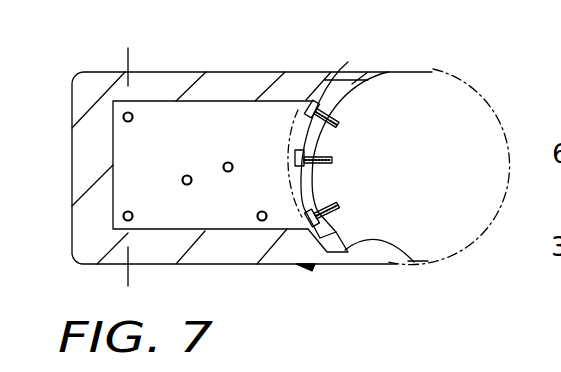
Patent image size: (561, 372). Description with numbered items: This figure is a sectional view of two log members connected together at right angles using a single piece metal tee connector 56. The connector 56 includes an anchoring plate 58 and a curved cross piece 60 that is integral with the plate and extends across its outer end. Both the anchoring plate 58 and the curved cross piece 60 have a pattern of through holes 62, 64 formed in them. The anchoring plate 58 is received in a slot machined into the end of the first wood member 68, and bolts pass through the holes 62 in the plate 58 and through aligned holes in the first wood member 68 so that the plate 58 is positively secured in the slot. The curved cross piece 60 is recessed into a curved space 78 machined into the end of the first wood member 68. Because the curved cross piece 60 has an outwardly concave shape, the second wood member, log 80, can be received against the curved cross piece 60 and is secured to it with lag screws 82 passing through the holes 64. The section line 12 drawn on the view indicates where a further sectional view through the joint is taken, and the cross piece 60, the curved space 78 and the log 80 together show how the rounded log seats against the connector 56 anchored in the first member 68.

The section line 12 is at (128, 57).
The metal tee connector 56 is at (163, 116).
The anchoring plate 58 is at (203, 125).
The curved cross piece 60 is at (314, 145).
The through holes 62 is at (123, 116).
The through holes 64 is at (346, 64).
The first wood member 68 is at (312, 270).
The curved space 78 is at (405, 256).
The log 80 is at (476, 124).
The lag screws 82 is at (339, 203).